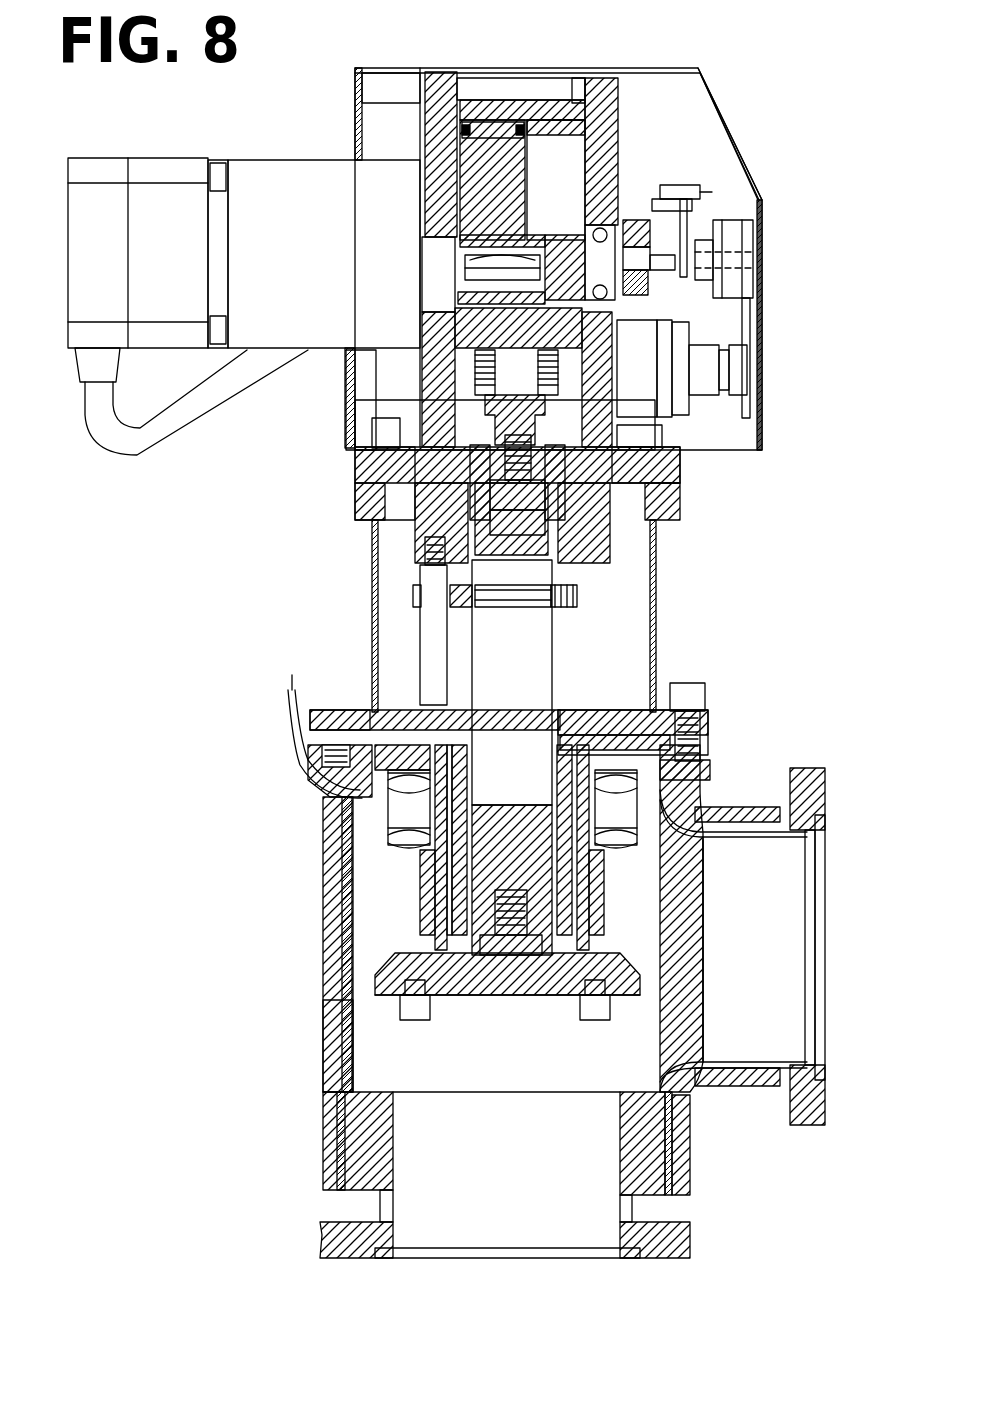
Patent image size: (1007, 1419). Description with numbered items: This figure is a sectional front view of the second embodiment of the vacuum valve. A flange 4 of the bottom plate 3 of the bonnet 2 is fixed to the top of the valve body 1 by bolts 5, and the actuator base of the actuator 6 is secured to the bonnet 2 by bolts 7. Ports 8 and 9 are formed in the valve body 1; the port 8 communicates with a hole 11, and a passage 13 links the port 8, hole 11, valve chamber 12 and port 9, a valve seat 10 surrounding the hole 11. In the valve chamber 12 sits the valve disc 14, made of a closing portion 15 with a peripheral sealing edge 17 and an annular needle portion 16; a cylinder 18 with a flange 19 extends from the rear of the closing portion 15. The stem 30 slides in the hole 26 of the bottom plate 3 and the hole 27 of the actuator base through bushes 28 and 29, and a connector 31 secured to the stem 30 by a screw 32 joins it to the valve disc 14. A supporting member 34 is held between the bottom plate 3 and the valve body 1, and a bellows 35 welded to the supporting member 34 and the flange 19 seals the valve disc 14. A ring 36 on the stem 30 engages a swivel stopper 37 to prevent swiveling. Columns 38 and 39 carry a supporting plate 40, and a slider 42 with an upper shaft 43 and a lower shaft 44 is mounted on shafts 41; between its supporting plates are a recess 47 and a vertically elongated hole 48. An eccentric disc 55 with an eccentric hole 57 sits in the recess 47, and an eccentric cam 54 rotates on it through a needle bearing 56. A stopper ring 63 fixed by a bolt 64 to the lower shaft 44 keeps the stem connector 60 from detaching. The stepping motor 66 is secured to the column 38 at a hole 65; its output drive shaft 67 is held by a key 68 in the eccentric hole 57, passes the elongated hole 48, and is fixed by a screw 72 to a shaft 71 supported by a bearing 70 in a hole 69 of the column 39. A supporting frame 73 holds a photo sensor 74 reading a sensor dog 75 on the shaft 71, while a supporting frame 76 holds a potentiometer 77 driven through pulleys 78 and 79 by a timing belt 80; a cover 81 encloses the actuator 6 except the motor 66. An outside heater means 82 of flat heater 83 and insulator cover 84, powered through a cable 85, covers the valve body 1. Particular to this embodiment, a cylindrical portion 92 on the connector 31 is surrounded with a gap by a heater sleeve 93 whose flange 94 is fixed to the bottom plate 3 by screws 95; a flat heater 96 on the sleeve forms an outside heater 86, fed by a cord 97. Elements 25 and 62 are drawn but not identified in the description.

The valve body 1 is at (836, 742).
The bonnet 2 is at (680, 640).
The bottom plate 3 is at (360, 705).
The flange 4 is at (720, 712).
The bolts 5 is at (690, 680).
The actuator 6 is at (350, 445).
The bolts 7 is at (345, 410).
The port 8 is at (565, 1250).
The port 9 is at (820, 1050).
The valve seat 10 is at (355, 1080).
The hole 11 is at (440, 1085).
The valve chamber 12 is at (795, 992).
The passage 13 is at (433, 1253).
The valve disc 14 is at (338, 956).
The closing portion 15 is at (645, 975).
The annular needle portion 16 is at (590, 1020).
The annular sealing edge 17 is at (703, 985).
The cylinder 18 is at (705, 920).
The flange 19 is at (435, 850).
The valve seat 25 is at (635, 995).
The hole 26 is at (555, 745).
The hole 27 is at (660, 505).
The bush 28 is at (562, 730).
The bush 29 is at (550, 545).
The stem 30 is at (558, 632).
The connector 31 is at (340, 905).
The screw 32 is at (500, 1000).
The supporting member 34 is at (292, 685).
The bellows 35 is at (385, 800).
The ring 36 is at (656, 575).
The swivel stopper 37 is at (430, 610).
The column 38 is at (355, 102).
The column 39 is at (665, 100).
The supporting plate 40 is at (490, 98).
The shafts 41 is at (598, 100).
The slider 42 is at (475, 95).
The upper shaft 43 is at (578, 90).
The lower shaft 44 is at (352, 360).
The recess 47 is at (432, 117).
The vertically elongated hole 48 is at (690, 90).
The eccentric cam 54 is at (425, 135).
The eccentric disc 55 is at (660, 130).
The needle bearing 56 is at (492, 122).
The eccentric hole 57 is at (425, 205).
The stem connector 60 is at (384, 418).
The piston 62 is at (480, 400).
The stopper ring 63 is at (640, 465).
The bolt 64 is at (370, 505).
The hole 65 is at (455, 320).
The stepping motor 66 is at (255, 158).
The output drive shaft 67 is at (460, 195).
The key 68 is at (465, 246).
The hole 69 is at (632, 235).
The bearing 70 is at (670, 340).
The shaft 71 is at (556, 235).
The screw 72 is at (458, 295).
The supporting frame 73 is at (740, 225).
The photo sensor 74 is at (650, 270).
The sensor dog 75 is at (680, 185).
The supporting frame 76 is at (730, 400).
The potentiometer 77 is at (720, 445).
The pulley 78 is at (750, 250).
The pulley 79 is at (750, 380).
The timing belt 80 is at (700, 375).
The cover 81 is at (712, 64).
The outside heater means 82 is at (298, 1205).
The flat heater 83 is at (335, 1160).
The insulator cover 84 is at (340, 1115).
The cable 85 is at (300, 748).
The outside heater 86 is at (440, 890).
The cylindrical portion 92 is at (575, 895).
The heater sleeve 93 is at (635, 870).
The flange 94 is at (705, 718).
The screws 95 is at (705, 768).
The flat heater 96 is at (590, 940).
The cord 97 is at (385, 705).